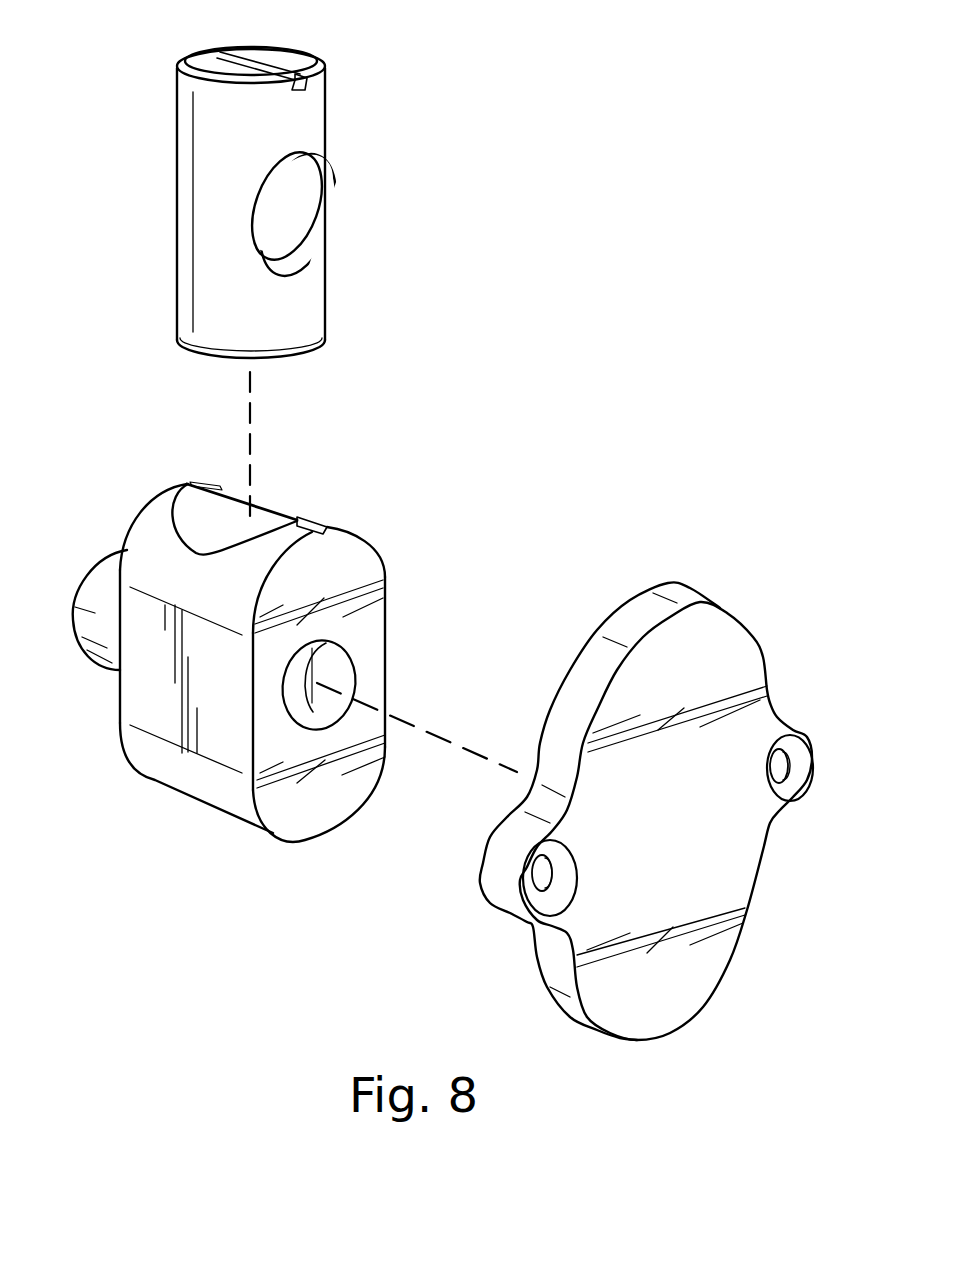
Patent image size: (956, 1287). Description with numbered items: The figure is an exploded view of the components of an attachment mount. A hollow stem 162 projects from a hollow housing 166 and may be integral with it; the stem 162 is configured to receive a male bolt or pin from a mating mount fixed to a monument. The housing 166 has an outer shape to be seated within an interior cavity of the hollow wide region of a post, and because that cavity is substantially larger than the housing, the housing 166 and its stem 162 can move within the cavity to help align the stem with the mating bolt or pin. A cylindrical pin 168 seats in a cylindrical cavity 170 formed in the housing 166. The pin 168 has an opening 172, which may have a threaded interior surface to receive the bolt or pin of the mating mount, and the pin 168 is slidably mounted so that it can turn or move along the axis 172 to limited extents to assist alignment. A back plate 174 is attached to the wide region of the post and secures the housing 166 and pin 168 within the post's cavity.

The hollow stem 162 is at (95, 613).
The hollow housing 166 is at (383, 556).
The cylindrical pin 168 is at (313, 107).
The cylindrical cavity 170 is at (267, 518).
The opening 172 is at (293, 202).
The back plate 174 is at (680, 835).